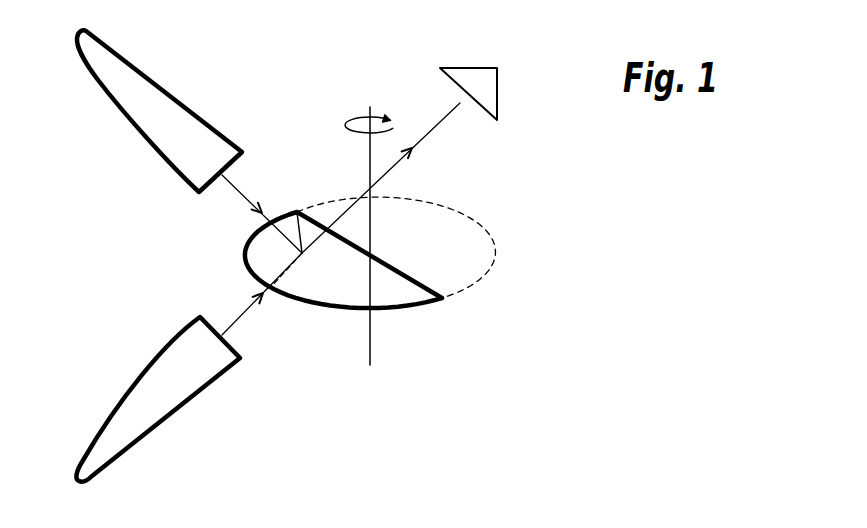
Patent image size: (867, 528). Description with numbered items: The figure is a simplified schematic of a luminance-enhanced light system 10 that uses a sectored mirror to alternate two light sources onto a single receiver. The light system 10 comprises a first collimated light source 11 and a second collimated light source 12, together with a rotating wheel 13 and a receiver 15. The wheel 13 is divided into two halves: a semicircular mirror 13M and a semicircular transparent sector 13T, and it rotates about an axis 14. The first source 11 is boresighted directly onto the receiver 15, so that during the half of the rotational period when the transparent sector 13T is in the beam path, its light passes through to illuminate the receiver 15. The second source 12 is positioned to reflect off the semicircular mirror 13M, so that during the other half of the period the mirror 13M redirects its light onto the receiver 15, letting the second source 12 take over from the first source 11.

The light system 10 is at (565, 254).
The first collimated light source 11 is at (105, 390).
The second collimated light source 12 is at (107, 108).
The wheel 13 is at (400, 251).
The semicircular mirror 13M is at (323, 316).
The semicircular transparent sector 13T is at (426, 276).
The axis 14 is at (365, 100).
The receiver 15 is at (500, 98).